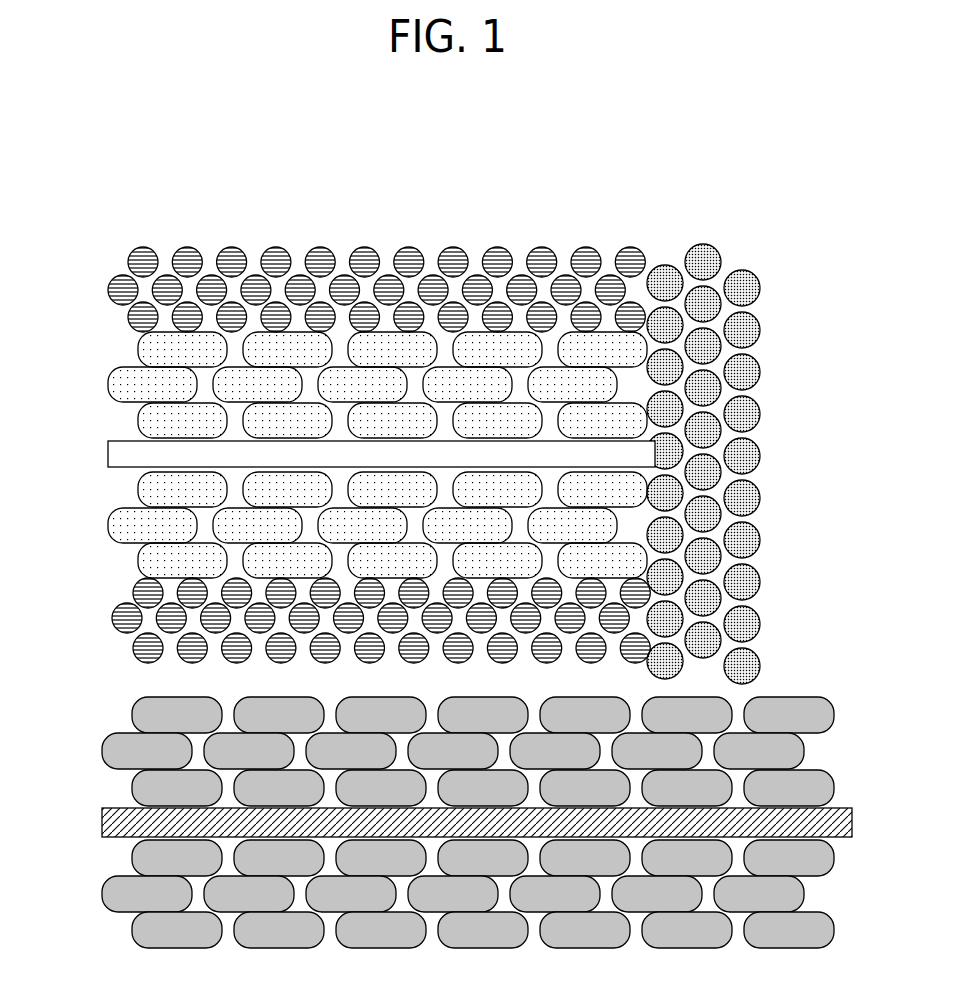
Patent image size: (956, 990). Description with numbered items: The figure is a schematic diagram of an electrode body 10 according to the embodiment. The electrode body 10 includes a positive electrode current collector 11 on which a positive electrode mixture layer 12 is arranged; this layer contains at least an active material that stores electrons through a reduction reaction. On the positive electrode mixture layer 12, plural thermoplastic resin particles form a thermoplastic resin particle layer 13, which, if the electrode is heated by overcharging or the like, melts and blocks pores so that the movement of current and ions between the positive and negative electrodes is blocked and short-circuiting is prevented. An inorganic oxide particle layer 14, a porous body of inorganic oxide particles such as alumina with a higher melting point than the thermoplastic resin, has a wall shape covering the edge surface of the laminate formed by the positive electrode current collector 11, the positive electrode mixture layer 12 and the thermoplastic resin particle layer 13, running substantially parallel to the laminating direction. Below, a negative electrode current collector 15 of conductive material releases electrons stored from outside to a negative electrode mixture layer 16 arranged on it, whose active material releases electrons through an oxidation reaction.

The electrode body 10 is at (464, 136).
The positive electrode current collector 11 is at (134, 442).
The positive electrode mixture layer 12 is at (134, 368).
The thermoplastic resin particle layer 13 is at (146, 250).
The inorganic oxide particle layer 14 is at (716, 249).
The negative electrode current collector 15 is at (124, 809).
The negative electrode mixture layer 16 is at (128, 734).